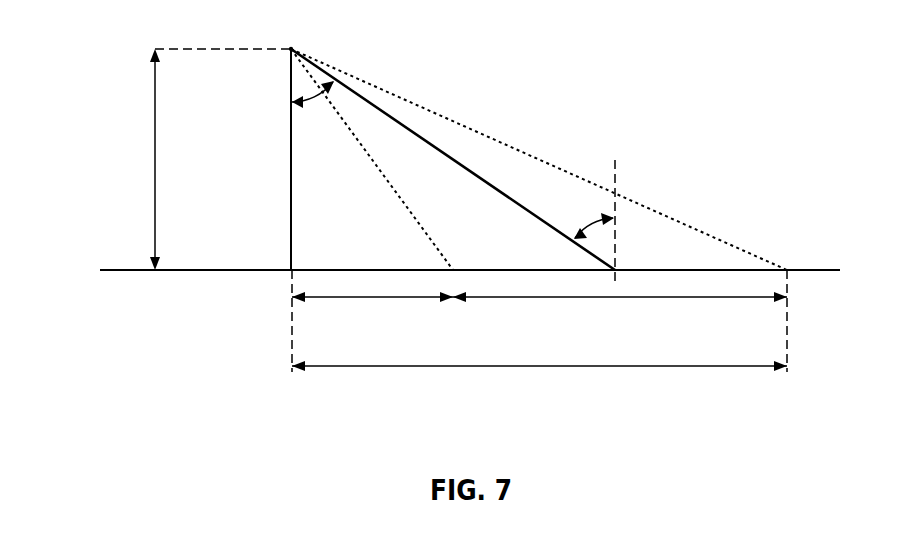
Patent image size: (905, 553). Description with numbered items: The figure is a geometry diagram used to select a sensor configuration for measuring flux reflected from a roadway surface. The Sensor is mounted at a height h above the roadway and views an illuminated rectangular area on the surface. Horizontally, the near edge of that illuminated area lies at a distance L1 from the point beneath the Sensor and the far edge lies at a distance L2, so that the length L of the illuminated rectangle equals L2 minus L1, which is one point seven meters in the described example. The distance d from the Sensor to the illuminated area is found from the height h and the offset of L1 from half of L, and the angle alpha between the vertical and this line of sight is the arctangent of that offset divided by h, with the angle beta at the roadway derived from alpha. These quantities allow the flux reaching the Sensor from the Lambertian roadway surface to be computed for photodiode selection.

The sensor Sensor is at (288, 46).
The distance d is at (466, 166).
The height h is at (155, 162).
The near distance L1 is at (372, 300).
The illuminated area length L is at (625, 300).
The far distance L2 is at (537, 368).